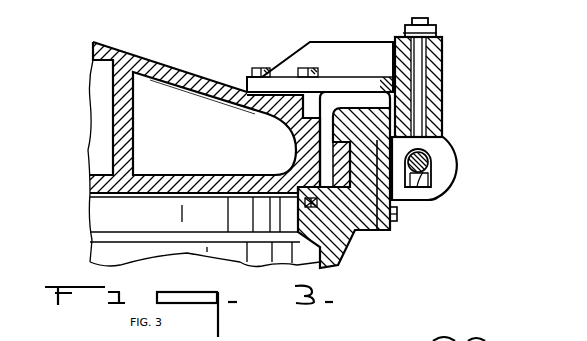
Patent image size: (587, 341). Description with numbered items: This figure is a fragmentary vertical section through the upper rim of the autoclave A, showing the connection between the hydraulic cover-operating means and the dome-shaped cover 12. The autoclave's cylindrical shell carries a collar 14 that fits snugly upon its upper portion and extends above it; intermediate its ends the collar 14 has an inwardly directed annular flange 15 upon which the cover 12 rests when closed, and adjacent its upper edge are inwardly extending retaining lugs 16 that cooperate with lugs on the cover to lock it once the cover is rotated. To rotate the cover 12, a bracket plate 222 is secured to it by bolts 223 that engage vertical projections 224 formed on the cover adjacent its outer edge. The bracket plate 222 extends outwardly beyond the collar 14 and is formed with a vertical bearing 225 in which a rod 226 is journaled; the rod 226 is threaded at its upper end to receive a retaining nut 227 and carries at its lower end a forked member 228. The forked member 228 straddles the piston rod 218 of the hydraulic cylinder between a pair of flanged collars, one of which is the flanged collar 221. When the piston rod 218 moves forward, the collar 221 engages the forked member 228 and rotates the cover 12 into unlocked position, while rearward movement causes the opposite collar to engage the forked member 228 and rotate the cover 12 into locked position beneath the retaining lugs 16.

The cover 12 is at (130, 54).
The collar 14 is at (353, 238).
The annular flange 15 is at (333, 160).
The retaining lugs 16 is at (355, 106).
The autoclave A is at (112, 213).
The piston rod 218 is at (397, 215).
The flanged collar 221 is at (437, 197).
The bracket plate 222 is at (276, 78).
The bolts 223 is at (322, 72).
The vertical projections 224 is at (263, 118).
The vertical bearing 225 is at (443, 50).
The rod 226 is at (415, 75).
The retaining nut 227 is at (430, 27).
The forked member 228 is at (440, 150).